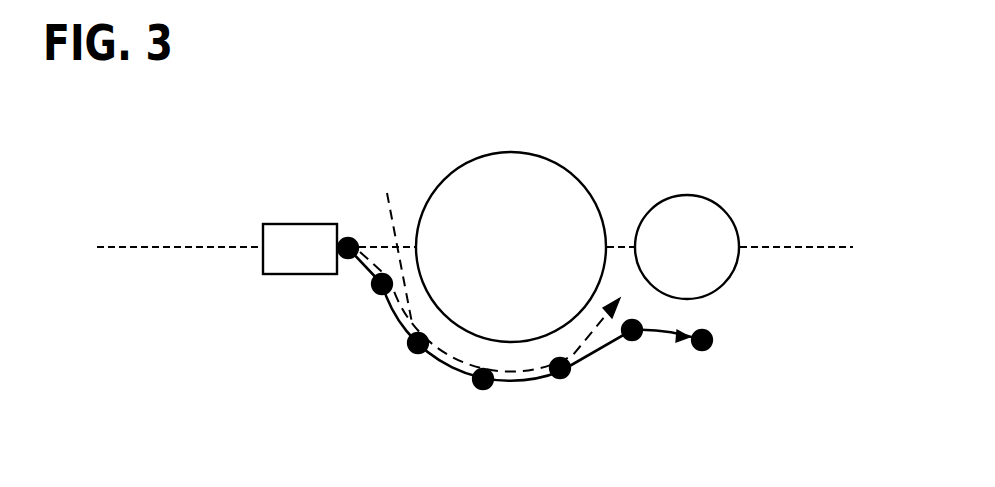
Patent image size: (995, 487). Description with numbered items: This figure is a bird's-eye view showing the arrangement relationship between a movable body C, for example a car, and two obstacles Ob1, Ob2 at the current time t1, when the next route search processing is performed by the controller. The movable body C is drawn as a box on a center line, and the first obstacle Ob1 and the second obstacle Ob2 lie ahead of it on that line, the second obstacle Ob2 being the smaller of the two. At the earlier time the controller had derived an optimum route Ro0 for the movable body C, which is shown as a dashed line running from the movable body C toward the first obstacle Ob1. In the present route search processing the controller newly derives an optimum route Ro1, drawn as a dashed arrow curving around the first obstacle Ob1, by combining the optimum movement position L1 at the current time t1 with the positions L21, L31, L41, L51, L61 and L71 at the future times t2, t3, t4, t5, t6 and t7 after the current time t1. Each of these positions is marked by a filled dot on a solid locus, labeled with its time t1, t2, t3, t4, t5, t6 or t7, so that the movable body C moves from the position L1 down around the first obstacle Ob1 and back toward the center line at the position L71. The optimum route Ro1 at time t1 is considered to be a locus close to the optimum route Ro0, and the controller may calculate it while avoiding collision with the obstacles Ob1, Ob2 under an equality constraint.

The movable body C is at (297, 240).
The obstacle Ob1 is at (513, 170).
The obstacle Ob2 is at (688, 208).
The optimum route Ro0 is at (399, 241).
The optimum route Ro1 is at (517, 383).
The optimum movement position L1 is at (352, 237).
The position L21 is at (372, 290).
The position L31 is at (408, 350).
The position L41 is at (475, 385).
The position L51 is at (566, 376).
The position L61 is at (640, 338).
The position L71 is at (712, 341).
The time t1 is at (353, 267).
The future time t2 is at (380, 304).
The future time t3 is at (416, 361).
The future time t4 is at (482, 398).
The future time t5 is at (563, 387).
The future time t6 is at (635, 348).
The future time t7 is at (702, 356).